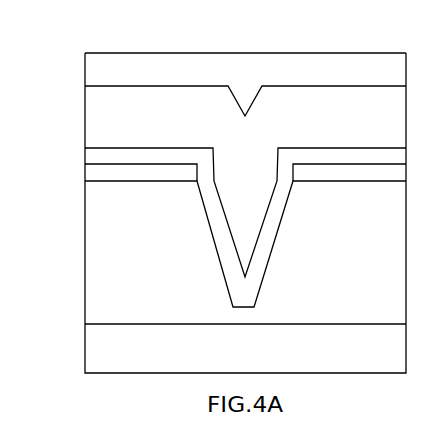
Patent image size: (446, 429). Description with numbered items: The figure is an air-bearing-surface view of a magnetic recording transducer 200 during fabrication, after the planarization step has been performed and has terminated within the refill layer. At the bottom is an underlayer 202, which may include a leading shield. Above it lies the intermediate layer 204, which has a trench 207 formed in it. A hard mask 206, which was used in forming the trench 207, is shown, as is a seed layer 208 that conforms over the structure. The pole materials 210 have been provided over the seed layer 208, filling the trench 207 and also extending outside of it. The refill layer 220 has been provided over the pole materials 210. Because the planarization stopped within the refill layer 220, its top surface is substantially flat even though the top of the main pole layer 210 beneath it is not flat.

The transducer 200 is at (226, 32).
The underlayer 202 is at (245, 343).
The intermediate layer 204 is at (245, 244).
The hard mask 206 is at (84, 173).
The trench 207 is at (247, 162).
The seed layer 208 is at (84, 157).
The pole materials 210 is at (245, 114).
The refill layer 220 is at (245, 67).